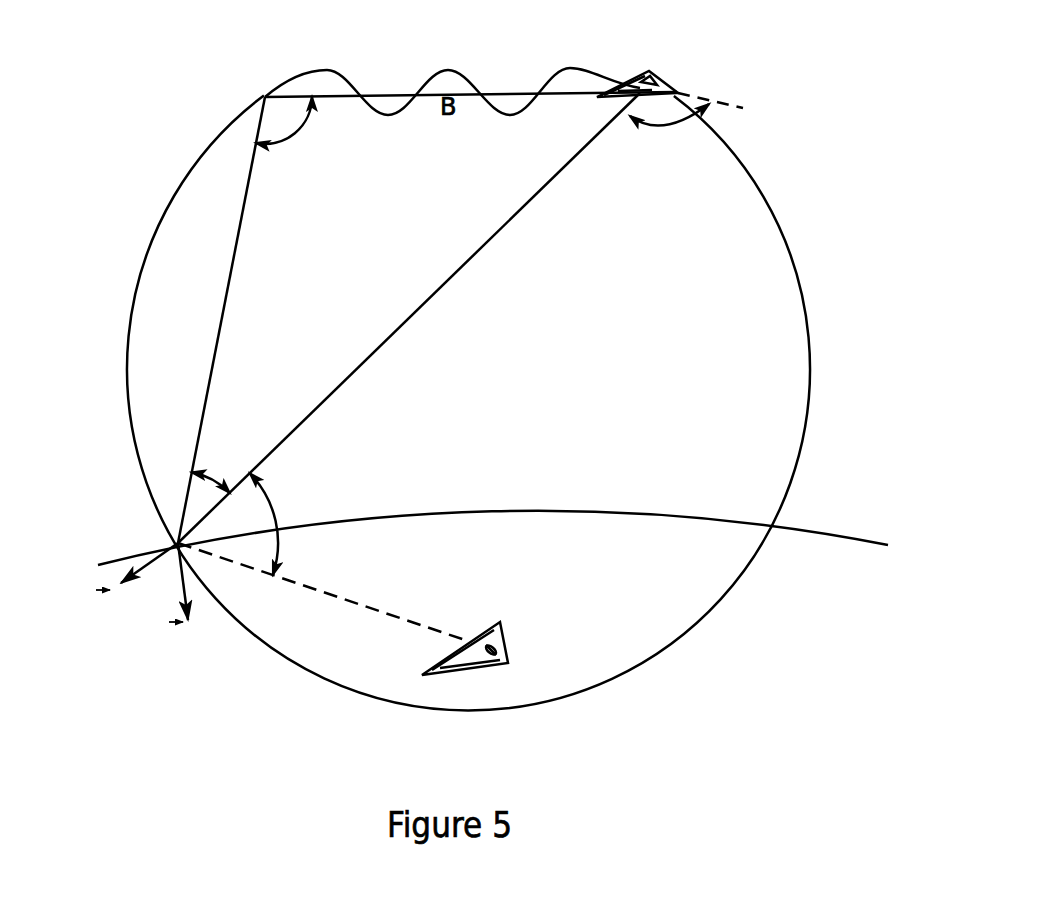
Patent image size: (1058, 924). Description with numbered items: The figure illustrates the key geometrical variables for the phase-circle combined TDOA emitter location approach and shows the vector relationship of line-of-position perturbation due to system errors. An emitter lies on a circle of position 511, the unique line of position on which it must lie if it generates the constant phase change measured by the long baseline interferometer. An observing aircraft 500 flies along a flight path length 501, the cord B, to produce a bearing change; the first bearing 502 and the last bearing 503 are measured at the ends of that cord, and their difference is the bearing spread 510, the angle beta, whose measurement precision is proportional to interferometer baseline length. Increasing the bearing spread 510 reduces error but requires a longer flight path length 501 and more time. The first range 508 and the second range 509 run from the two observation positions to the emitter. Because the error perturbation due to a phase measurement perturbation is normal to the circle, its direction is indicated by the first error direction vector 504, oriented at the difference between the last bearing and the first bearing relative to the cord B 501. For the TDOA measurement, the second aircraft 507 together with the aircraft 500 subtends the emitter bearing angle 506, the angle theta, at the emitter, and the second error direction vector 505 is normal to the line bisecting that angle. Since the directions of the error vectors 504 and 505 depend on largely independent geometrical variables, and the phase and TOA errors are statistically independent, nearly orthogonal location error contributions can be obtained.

The aircraft 500 is at (660, 82).
The flight path length 501 is at (392, 92).
The first bearing 502 is at (322, 157).
The last bearing 503 is at (678, 160).
The error direction vector i1 504 is at (118, 580).
The error direction vector i2 505 is at (183, 592).
The emitter bearing angle 506 is at (300, 500).
The aircraft 507 is at (498, 623).
The range r1 508 is at (260, 308).
The range r2 509 is at (498, 298).
The bearing spread 510 is at (233, 455).
The circle of position 511 is at (132, 303).